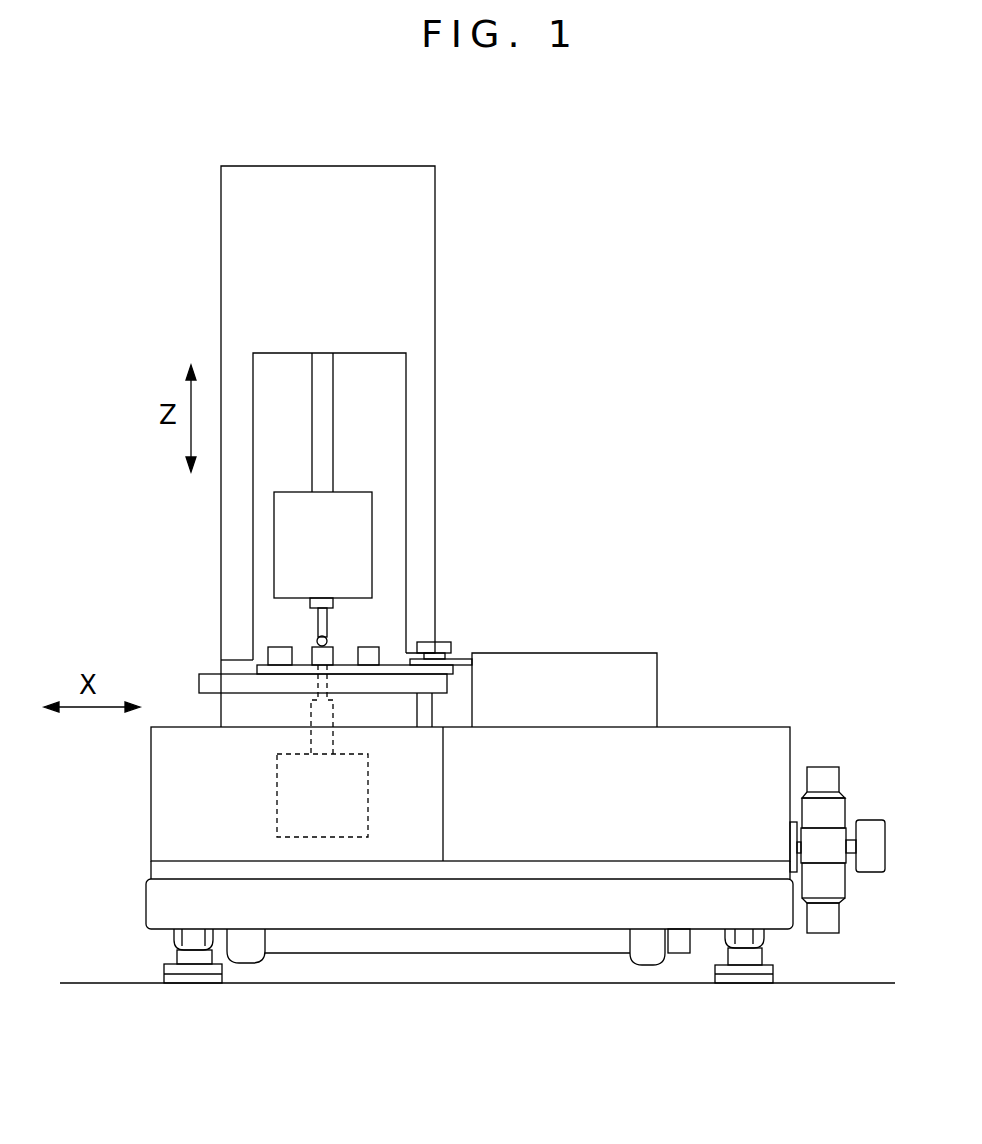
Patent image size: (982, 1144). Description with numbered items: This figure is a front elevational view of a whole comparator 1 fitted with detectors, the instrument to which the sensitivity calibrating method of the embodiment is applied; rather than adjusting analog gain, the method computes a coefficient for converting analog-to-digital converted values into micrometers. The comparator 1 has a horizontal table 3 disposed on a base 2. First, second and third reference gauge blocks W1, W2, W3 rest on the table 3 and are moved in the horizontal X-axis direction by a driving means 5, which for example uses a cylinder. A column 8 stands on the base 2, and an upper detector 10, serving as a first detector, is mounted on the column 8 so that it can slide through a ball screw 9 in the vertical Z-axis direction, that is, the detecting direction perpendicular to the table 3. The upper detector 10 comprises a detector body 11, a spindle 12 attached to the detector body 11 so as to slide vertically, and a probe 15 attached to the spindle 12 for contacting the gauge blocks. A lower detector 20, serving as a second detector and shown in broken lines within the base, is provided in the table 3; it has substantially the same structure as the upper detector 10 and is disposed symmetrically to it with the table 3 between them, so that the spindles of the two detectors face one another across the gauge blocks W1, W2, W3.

The comparator 1 is at (688, 211).
The base 2 is at (758, 730).
The table 3 is at (433, 682).
The driving means 5 is at (637, 677).
The column 8 is at (421, 198).
The ball screw 9 is at (328, 378).
The upper detector 10 is at (372, 492).
The detector body 11 is at (372, 547).
The spindle 12 is at (319, 628).
The probe 15 is at (320, 639).
The first reference gauge block W1 is at (267, 650).
The second reference gauge block W2 is at (335, 652).
The third reference gauge block W3 is at (380, 648).
The lower detector 20 is at (277, 788).